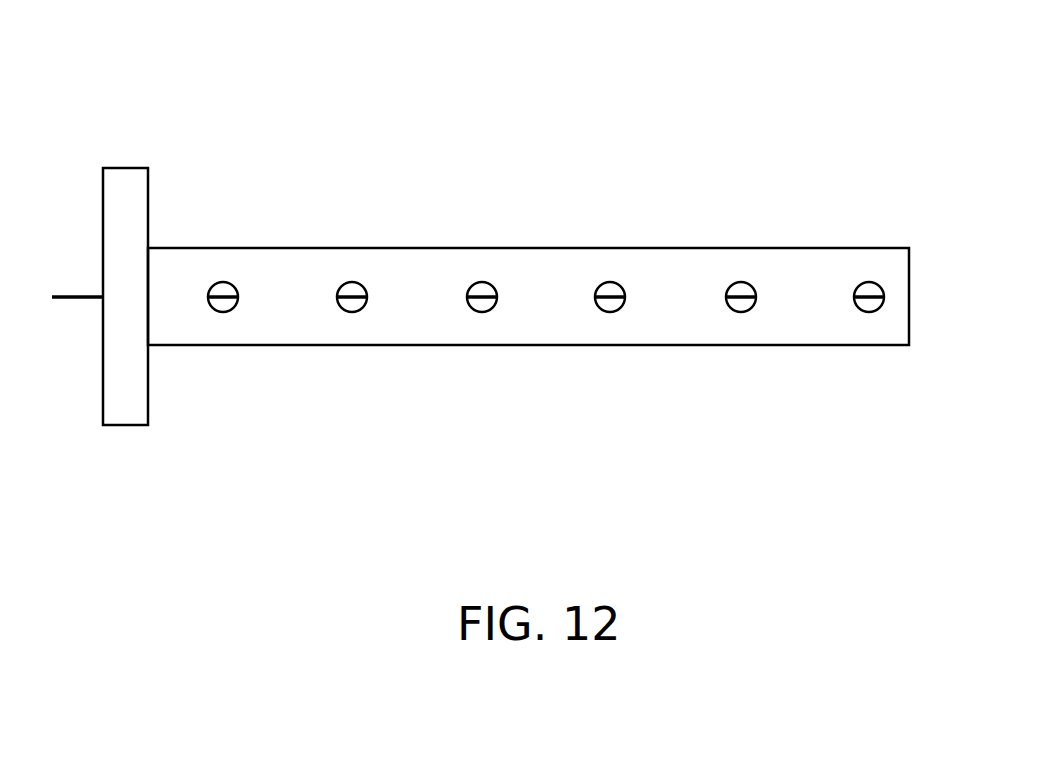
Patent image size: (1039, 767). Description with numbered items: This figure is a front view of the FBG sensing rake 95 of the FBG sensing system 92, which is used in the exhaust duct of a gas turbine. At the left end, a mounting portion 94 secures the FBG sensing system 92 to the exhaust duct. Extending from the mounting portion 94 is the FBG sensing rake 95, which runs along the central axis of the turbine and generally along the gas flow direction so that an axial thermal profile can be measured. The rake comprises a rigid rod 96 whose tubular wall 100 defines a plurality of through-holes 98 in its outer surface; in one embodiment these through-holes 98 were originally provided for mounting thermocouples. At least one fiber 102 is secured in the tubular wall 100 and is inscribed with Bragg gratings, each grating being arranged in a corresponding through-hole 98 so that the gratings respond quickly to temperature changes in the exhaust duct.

The FBG sensing system 92 is at (787, 82).
The mounting portion 94 is at (128, 175).
The FBG sensing rake 95 is at (808, 327).
The rigid rod 96 is at (276, 331).
The through-holes 98 is at (483, 305).
The tubular wall 100 is at (352, 331).
The fiber 102 is at (618, 302).